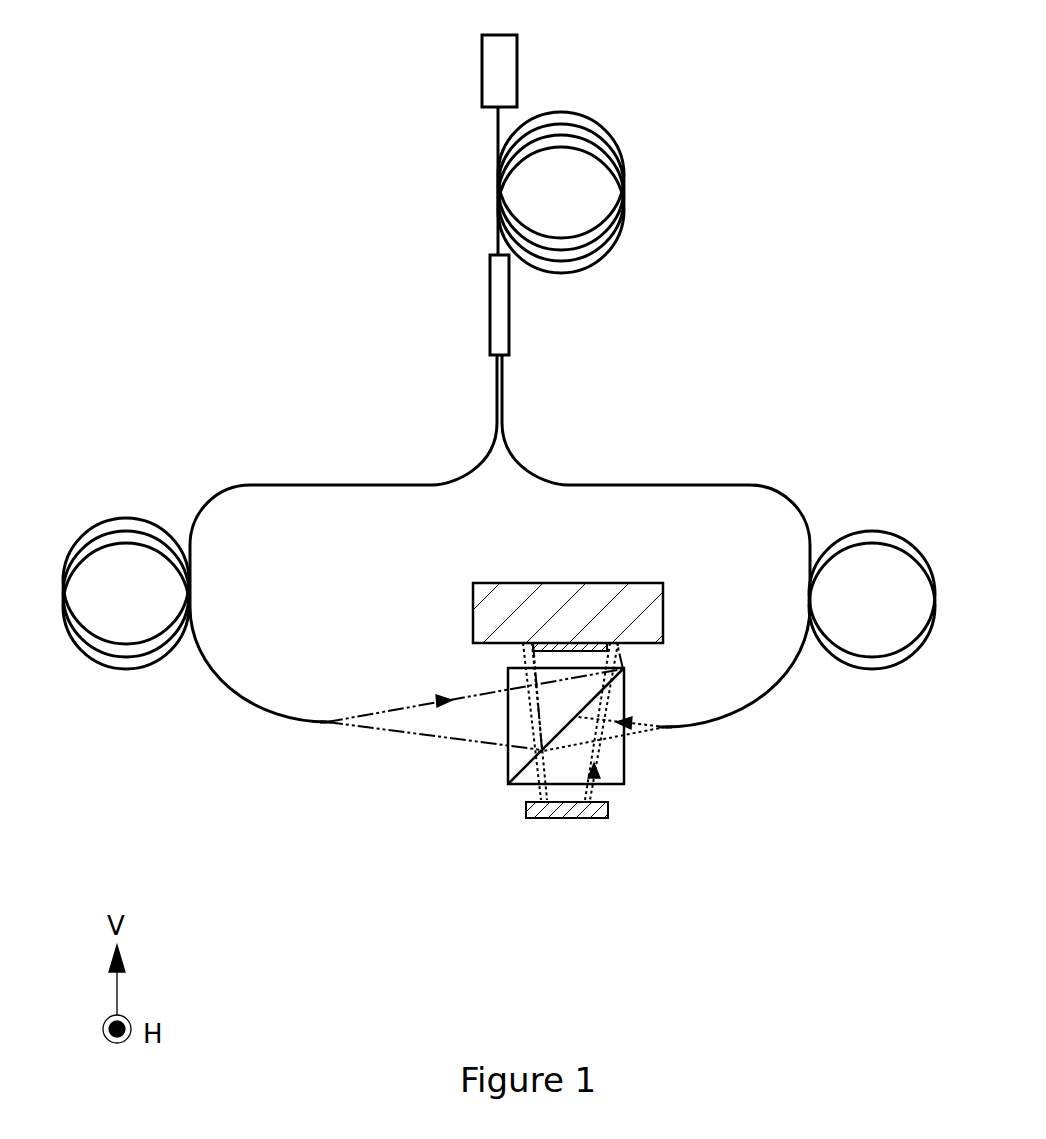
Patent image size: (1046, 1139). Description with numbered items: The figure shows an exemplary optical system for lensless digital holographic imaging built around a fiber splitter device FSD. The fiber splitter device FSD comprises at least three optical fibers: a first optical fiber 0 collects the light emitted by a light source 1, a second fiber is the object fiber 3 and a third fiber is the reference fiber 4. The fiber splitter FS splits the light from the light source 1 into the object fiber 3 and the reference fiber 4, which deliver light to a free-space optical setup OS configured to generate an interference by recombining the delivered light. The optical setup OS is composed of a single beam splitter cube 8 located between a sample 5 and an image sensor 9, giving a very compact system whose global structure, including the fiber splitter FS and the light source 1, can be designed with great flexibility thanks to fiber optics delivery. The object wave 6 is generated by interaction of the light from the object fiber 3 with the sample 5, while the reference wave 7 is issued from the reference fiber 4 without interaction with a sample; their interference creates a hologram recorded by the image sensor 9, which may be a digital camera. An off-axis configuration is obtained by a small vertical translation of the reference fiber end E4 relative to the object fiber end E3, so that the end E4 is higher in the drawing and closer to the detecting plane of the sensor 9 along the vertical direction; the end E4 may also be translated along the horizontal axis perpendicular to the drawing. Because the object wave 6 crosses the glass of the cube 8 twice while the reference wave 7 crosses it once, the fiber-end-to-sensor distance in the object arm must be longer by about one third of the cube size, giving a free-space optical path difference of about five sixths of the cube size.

The light source 1 is at (492, 53).
The first optical fiber 0 is at (620, 145).
The fiber splitter FS is at (495, 312).
The fiber splitter device FSD is at (740, 248).
The object fiber 3 is at (608, 483).
The reference fiber 4 is at (348, 483).
The end of object fiber E3 is at (670, 730).
The end of reference fiber E4 is at (327, 720).
The optical setup OS is at (383, 780).
The object wave 6 is at (605, 703).
The beam splitter cube 8 is at (508, 768).
The image sensor 9 is at (583, 643).
The sample 5 is at (567, 820).
The reference wave 7 is at (408, 705).